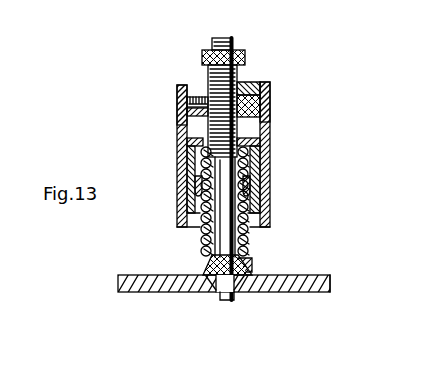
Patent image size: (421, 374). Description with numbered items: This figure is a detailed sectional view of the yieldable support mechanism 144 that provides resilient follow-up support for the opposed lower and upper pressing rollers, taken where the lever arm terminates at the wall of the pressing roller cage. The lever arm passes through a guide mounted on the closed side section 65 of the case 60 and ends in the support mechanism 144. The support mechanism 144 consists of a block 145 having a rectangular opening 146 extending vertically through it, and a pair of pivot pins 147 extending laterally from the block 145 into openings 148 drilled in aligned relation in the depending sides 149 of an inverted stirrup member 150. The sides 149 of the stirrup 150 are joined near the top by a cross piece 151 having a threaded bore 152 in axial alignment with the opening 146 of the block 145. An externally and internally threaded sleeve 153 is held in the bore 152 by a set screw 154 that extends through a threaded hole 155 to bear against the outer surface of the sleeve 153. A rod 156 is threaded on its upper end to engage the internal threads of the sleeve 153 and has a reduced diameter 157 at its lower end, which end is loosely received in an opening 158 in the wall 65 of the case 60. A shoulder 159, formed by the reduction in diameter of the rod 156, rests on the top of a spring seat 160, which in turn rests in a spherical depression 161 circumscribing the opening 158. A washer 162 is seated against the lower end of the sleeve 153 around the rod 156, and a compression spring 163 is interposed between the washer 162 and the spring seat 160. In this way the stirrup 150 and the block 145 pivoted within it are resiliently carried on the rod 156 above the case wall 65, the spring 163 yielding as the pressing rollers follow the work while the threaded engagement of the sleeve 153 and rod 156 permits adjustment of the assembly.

The case 60 is at (314, 268).
The closed side section 65 is at (330, 282).
The yieldable support mechanism 144 is at (293, 120).
The block 145 is at (252, 228).
The rectangular opening 146 is at (198, 231).
The pivot pins 147 is at (190, 186).
The openings 148 is at (179, 202).
The depending sides 149 is at (180, 117).
The inverted stirrup member 150 is at (267, 80).
The cross piece 151 is at (265, 87).
The threaded bore 152 is at (268, 100).
The externally and internally threaded sleeve 153 is at (242, 55).
The set screw 154 is at (182, 103).
The threaded hole 155 is at (176, 97).
The rod 156 is at (223, 40).
The reduced diameter 157 is at (223, 293).
The opening 158 is at (210, 280).
The shoulder 159 is at (240, 287).
The spring seat 160 is at (245, 266).
The spherical depression 161 is at (210, 275).
The washer 162 is at (180, 140).
The compression spring 163 is at (243, 241).